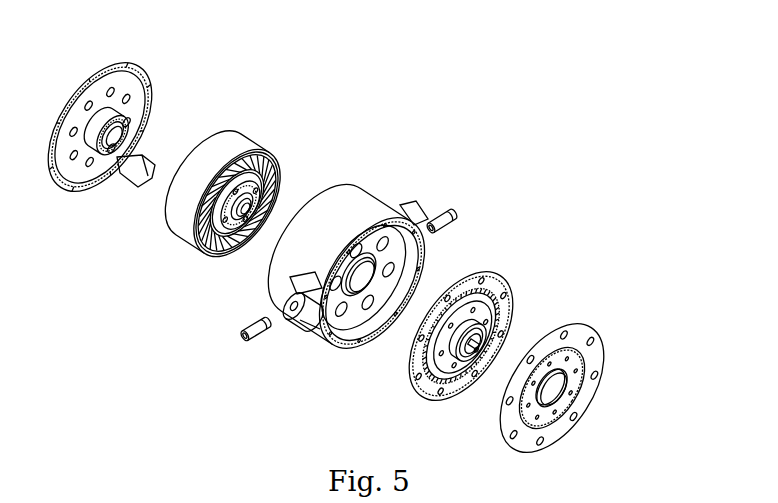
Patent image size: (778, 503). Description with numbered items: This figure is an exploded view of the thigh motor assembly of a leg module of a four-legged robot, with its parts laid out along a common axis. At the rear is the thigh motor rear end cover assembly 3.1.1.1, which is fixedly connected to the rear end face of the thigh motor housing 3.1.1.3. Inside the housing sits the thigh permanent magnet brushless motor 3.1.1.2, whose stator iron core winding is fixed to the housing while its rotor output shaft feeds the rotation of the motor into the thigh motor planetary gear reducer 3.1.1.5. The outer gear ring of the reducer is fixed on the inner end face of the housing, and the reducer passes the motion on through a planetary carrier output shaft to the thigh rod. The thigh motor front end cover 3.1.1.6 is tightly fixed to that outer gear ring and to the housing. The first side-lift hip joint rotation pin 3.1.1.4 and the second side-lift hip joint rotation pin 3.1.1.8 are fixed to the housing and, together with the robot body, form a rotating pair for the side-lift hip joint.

The thigh motor rear end cover assembly 3.1.1.1 is at (132, 93).
The thigh permanent magnet brushless motor 3.1.1.2 is at (229, 143).
The thigh motor housing 3.1.1.3 is at (347, 220).
The first side-lift hip joint rotation pin 3.1.1.4 is at (445, 221).
The thigh motor planetary gear reducer 3.1.1.5 is at (503, 297).
The thigh motor front end cover 3.1.1.6 is at (591, 349).
The second side-lift hip joint rotation pin 3.1.1.8 is at (259, 328).